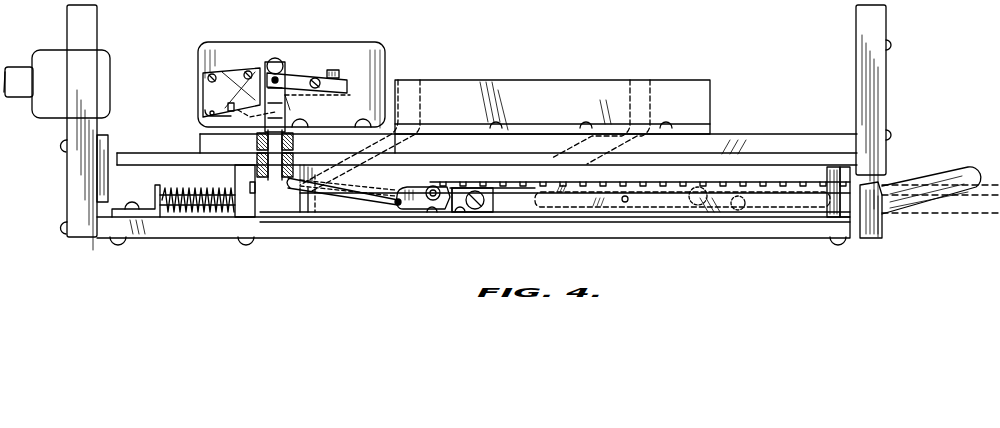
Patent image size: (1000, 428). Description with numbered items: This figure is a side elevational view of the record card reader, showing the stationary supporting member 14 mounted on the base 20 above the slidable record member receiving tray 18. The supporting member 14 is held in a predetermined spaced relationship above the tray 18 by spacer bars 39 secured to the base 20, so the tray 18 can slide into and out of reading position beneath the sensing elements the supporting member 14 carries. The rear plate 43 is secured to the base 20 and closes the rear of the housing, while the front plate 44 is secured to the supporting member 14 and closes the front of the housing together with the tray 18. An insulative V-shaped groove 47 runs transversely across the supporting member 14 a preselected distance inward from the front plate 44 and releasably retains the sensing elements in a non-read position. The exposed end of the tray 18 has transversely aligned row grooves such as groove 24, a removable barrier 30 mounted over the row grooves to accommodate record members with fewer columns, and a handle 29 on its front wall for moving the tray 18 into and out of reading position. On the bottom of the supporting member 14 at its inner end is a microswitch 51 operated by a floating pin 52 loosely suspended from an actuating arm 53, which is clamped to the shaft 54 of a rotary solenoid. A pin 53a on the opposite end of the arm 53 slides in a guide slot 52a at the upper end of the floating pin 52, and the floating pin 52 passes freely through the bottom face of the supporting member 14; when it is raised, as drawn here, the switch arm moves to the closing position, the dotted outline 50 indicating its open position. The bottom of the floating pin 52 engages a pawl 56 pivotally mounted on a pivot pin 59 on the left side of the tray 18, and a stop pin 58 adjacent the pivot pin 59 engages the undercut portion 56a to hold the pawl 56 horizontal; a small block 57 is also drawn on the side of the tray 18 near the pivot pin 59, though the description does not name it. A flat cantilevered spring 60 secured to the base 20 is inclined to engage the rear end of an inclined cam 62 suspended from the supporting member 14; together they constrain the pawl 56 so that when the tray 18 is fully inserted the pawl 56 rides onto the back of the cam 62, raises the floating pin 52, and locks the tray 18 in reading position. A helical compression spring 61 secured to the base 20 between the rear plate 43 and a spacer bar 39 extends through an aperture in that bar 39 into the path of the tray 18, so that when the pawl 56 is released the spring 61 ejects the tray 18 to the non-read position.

The supporting member 14 is at (816, 141).
The record member receiving tray 18 is at (761, 206).
The base 20 is at (432, 224).
The groove 24 is at (716, 190).
The handle 29 is at (976, 170).
The barrier 30 is at (760, 182).
The spacer bar 39 is at (245, 206).
The rear plate 43 is at (67, 172).
The front plate 44 is at (886, 97).
The V-shaped groove 47 is at (700, 160).
The lever 50 is at (428, 137).
The microswitch 51 is at (223, 90).
The floating pin 52 is at (266, 129).
The guide slot 52a is at (280, 60).
The actuating arm 53 is at (293, 78).
The pin 53a is at (273, 78).
The shaft 54 is at (317, 82).
The pawl 56 is at (284, 206).
The undercut portion 56a is at (408, 187).
The bracket block 57 is at (490, 212).
The stop pin 58 is at (395, 206).
The pivot pin 59 is at (450, 189).
The cantilevered spring 60 is at (303, 208).
The helical compression spring 61 is at (172, 194).
The inclined cam 62 is at (312, 178).